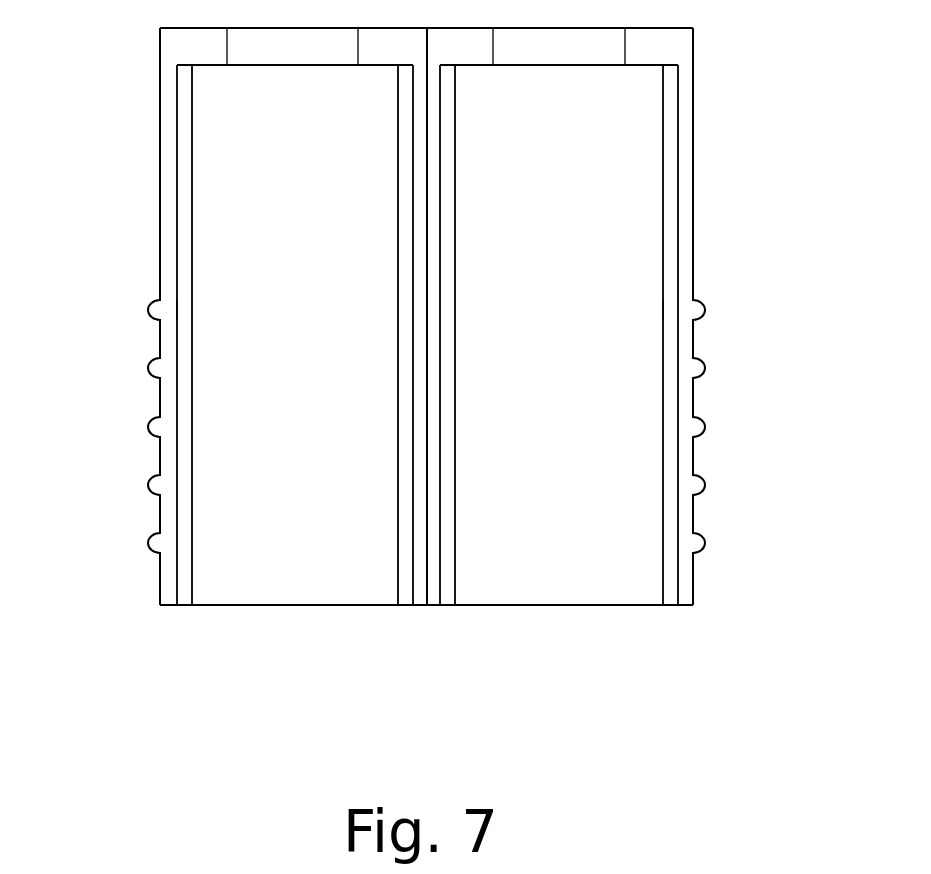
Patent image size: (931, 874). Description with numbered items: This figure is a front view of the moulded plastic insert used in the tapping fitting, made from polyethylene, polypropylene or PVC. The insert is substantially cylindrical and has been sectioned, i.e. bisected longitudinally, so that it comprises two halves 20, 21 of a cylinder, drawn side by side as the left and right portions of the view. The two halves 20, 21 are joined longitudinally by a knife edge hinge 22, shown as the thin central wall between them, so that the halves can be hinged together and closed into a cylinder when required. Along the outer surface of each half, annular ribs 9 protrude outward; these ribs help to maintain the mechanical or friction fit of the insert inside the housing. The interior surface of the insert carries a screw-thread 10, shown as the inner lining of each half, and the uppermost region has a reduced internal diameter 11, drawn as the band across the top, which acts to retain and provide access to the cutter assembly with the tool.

The annular ribs 9 is at (155, 422).
The screw-thread 10 is at (185, 508).
The reduced internal diameter 11 is at (665, 55).
The first half of the cylinder 20 is at (225, 167).
The second half of the cylinder 21 is at (590, 217).
The knife edge hinge 22 is at (422, 608).